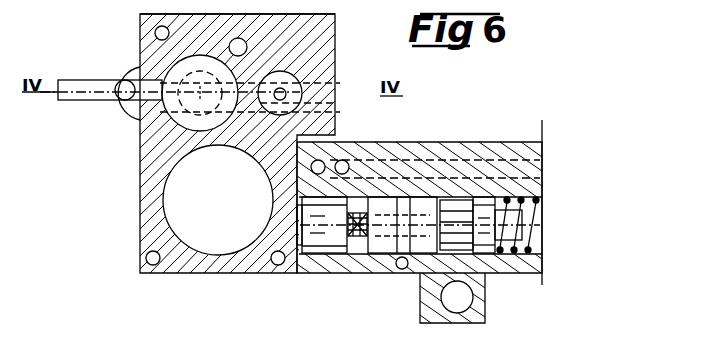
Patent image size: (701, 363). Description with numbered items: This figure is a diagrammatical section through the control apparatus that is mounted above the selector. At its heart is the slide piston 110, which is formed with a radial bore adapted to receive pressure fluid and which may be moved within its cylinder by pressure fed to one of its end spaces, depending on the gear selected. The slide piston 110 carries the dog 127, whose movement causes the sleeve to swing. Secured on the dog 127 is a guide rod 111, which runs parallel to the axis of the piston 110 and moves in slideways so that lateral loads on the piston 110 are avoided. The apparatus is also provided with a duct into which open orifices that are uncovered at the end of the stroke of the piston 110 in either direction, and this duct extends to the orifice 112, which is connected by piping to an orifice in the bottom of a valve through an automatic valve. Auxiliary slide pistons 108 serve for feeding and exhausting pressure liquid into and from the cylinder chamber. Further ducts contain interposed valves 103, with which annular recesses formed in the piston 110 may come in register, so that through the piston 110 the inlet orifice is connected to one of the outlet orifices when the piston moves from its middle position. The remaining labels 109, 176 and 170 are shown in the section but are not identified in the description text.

The dog 127 is at (77, 80).
The guide rod 111 is at (120, 100).
The slide piston 110 is at (152, 128).
The orifice 112 is at (160, 35).
The valves 103 is at (245, 50).
The auxiliary slide pistons 108 is at (296, 92).
The channel 109 is at (300, 112).
The line 176 is at (200, 0).
The housing 170 is at (45, 6).